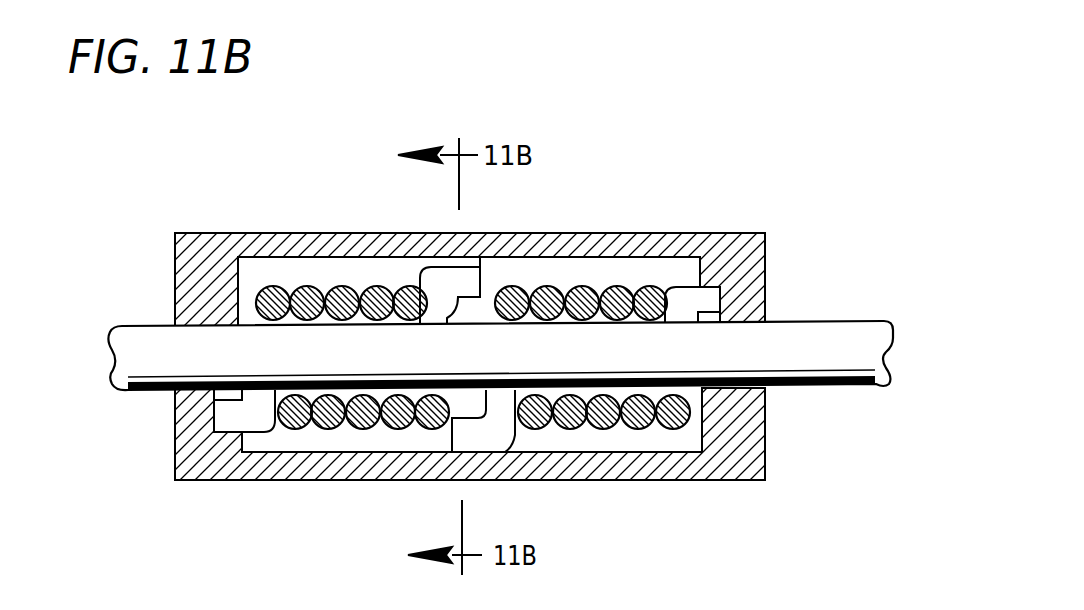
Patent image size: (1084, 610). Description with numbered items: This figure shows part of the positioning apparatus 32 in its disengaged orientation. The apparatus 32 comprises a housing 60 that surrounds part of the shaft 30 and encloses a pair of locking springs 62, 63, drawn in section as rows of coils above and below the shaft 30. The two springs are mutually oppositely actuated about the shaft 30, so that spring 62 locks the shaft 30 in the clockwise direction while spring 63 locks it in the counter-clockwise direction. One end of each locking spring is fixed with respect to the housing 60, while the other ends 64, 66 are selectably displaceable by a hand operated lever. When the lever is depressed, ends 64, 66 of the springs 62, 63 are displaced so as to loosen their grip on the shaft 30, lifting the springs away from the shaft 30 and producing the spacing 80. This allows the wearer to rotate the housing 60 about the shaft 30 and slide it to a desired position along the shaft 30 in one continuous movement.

The shaft 30 is at (787, 342).
The positioning apparatus 32 is at (352, 197).
The housing 60 is at (176, 240).
The locking spring 62 is at (327, 284).
The locking spring 63 is at (604, 290).
The end of locking spring 64 is at (463, 282).
The end of locking spring 66 is at (488, 435).
The spacing 80 is at (680, 392).